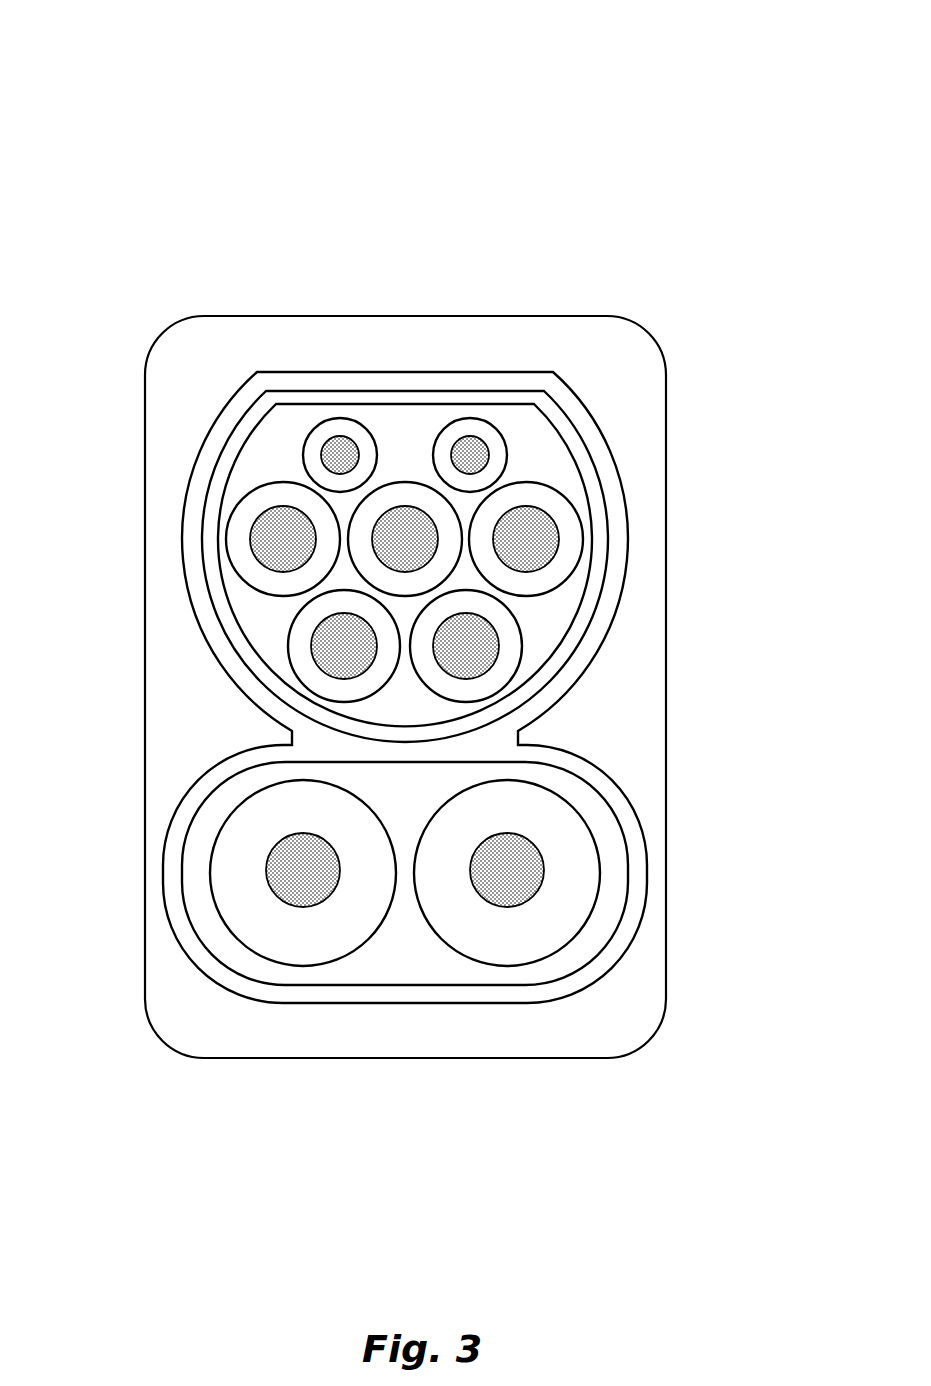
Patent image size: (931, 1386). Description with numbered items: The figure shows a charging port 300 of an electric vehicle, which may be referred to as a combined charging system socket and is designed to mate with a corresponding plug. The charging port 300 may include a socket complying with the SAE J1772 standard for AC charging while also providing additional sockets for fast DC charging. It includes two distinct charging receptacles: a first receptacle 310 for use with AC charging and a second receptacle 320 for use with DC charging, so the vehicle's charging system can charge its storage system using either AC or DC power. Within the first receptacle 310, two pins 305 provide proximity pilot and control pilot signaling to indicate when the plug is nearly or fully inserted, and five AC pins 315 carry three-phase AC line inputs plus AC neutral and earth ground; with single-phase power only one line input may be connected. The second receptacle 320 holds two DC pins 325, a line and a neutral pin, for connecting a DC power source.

The charging port 300 is at (483, 529).
The pins 305 is at (317, 363).
The first receptacle 310 is at (468, 687).
The AC pins 315 is at (207, 534).
The second receptacle 320 is at (483, 872).
The DC pins 325 is at (224, 873).